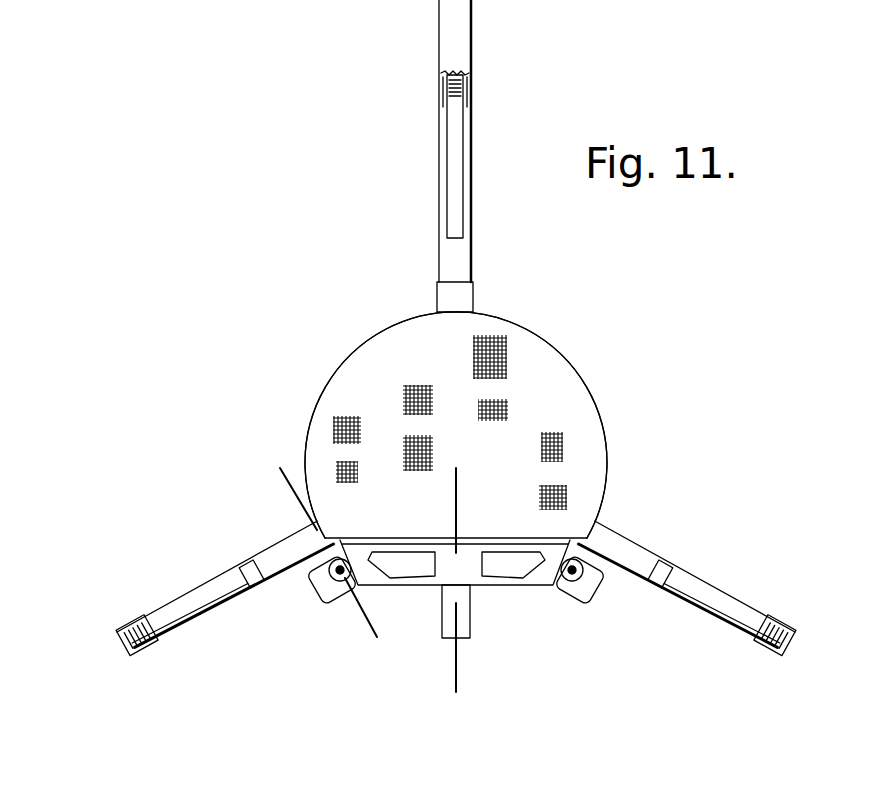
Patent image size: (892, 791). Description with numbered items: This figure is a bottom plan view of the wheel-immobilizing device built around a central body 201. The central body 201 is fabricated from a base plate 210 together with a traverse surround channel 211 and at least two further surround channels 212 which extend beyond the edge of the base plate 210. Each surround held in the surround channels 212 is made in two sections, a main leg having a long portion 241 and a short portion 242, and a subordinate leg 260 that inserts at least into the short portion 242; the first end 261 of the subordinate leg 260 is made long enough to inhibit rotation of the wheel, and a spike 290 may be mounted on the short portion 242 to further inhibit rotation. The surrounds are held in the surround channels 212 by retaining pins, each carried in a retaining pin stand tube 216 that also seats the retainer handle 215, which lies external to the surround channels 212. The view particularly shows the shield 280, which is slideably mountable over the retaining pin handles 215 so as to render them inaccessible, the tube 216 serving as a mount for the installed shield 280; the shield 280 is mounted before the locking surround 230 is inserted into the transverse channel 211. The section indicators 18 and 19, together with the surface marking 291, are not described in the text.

The central body 201 is at (297, 307).
The base plate 210 is at (511, 332).
The traverse surround channel 211 is at (473, 296).
The surround channels 212 is at (285, 562).
The retainer handle 215 is at (573, 590).
The retaining pin stand tube 216 is at (599, 557).
The locking surround 230 is at (438, 187).
The long portion 241 is at (203, 618).
The short portion 242 is at (452, 138).
The subordinate leg 260 is at (153, 652).
The first end 261 is at (172, 607).
The shield 280 is at (590, 594).
The spike 290 is at (466, 21).
The head surface 291 is at (573, 397).
The section line 18- 18 is at (282, 480).
The section line 19- 19 is at (455, 498).